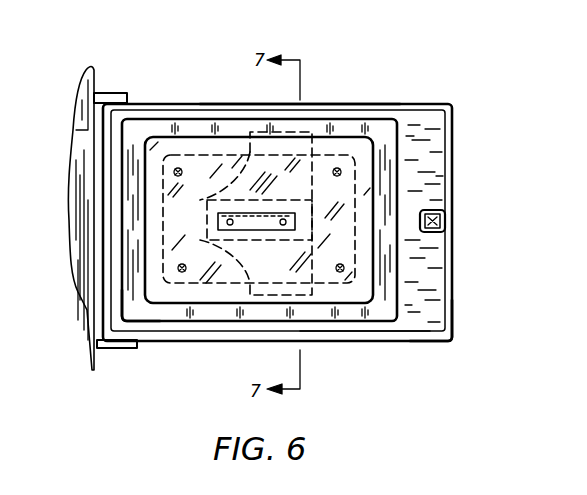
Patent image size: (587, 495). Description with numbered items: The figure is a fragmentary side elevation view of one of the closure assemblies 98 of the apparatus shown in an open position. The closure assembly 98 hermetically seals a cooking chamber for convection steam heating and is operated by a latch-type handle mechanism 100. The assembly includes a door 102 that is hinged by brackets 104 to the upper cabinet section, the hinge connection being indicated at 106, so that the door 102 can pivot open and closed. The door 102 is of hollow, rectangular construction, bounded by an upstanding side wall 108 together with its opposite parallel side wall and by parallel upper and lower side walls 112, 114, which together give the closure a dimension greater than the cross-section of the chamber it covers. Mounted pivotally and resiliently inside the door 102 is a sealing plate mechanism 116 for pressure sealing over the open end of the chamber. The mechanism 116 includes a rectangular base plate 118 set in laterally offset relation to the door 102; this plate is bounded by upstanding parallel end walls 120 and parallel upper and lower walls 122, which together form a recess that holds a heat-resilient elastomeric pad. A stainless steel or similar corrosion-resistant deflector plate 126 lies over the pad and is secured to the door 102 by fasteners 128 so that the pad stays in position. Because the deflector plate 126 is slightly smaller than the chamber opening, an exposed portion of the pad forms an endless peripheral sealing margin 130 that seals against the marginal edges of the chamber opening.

The closure assembly 98 is at (429, 92).
The latch-type handle mechanism 100 is at (447, 218).
The door 102 is at (430, 147).
The brackets 104 is at (104, 96).
The hinge 106 is at (128, 99).
The side wall 108 is at (118, 309).
The upper side wall 112 is at (325, 104).
The lower side wall 114 is at (448, 339).
The sealing plate mechanism 116 is at (408, 126).
The end walls 120 is at (402, 186).
The upper and lower walls 122 is at (352, 327).
The deflector plate 126 is at (333, 236).
The fasteners 128 is at (345, 268).
The peripheral sealing margin 130 is at (213, 296).
The base plate 118 is at (378, 297).